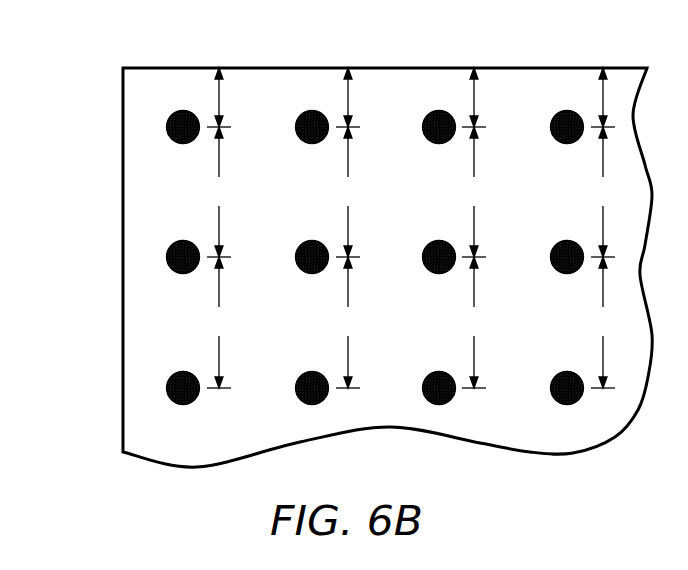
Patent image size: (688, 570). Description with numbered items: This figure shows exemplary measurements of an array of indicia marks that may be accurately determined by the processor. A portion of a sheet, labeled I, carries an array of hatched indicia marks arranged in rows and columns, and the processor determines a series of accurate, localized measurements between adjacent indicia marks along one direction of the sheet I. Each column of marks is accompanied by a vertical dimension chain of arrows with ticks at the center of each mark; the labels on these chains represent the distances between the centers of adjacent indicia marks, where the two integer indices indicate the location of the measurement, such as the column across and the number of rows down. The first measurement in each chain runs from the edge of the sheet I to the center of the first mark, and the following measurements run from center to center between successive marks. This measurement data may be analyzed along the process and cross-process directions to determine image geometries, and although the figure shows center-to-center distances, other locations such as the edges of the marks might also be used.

The image / exposure field I is at (150, 68).